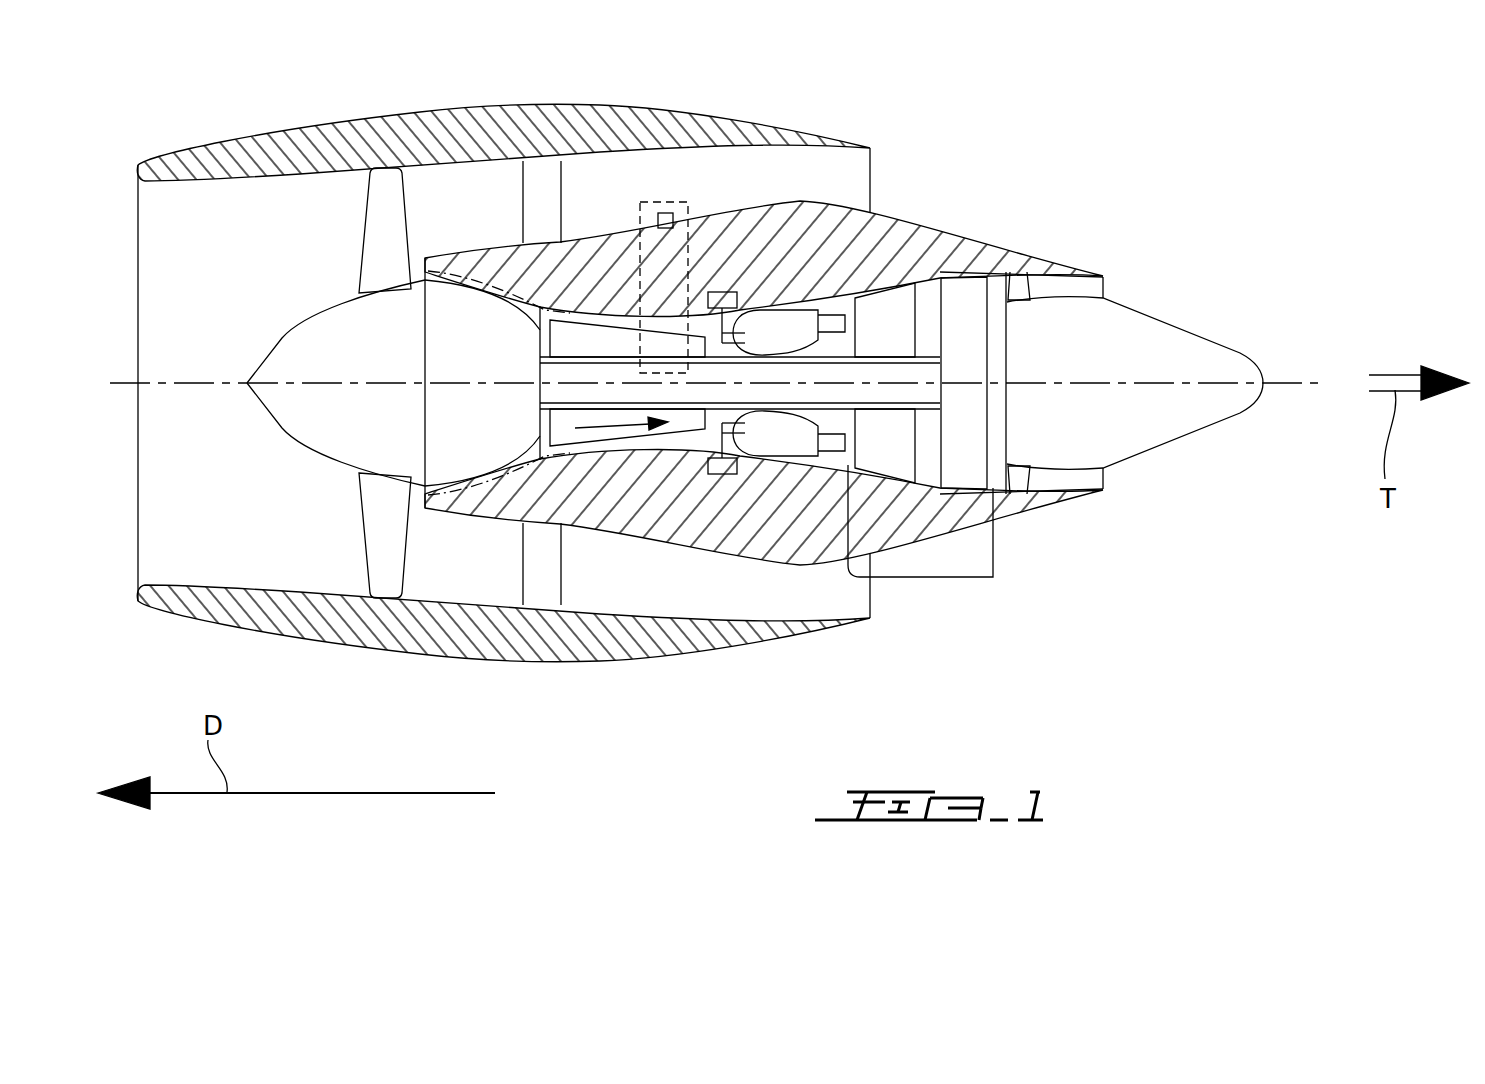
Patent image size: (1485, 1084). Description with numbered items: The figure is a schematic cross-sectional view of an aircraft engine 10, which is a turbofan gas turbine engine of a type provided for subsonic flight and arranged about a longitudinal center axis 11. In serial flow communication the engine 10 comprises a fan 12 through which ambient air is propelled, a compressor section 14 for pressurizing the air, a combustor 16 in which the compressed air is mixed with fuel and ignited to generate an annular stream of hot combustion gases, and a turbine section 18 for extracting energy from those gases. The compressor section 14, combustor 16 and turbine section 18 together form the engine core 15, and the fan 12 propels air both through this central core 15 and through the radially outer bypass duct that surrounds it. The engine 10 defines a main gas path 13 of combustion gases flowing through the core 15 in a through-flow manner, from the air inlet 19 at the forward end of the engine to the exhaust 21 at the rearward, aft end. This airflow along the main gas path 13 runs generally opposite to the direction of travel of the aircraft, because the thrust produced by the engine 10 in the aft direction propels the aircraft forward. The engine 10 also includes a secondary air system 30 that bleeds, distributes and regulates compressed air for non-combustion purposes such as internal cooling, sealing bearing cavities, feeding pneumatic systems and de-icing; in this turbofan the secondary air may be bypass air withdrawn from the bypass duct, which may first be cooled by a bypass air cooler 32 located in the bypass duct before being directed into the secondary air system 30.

The aircraft engine 10 is at (1090, 132).
The longitudinal center axis 11 is at (1315, 380).
The fan 12 is at (380, 522).
The main gas path 13 is at (624, 430).
The compressor section 14 is at (607, 337).
The core 15 is at (900, 218).
The combustor 16 is at (767, 333).
The turbine section 18 is at (918, 578).
The air inlet 19 is at (440, 494).
The exhaust 21 is at (1090, 478).
The secondary air system 30 is at (655, 185).
The bypass air cooler 32 is at (667, 213).